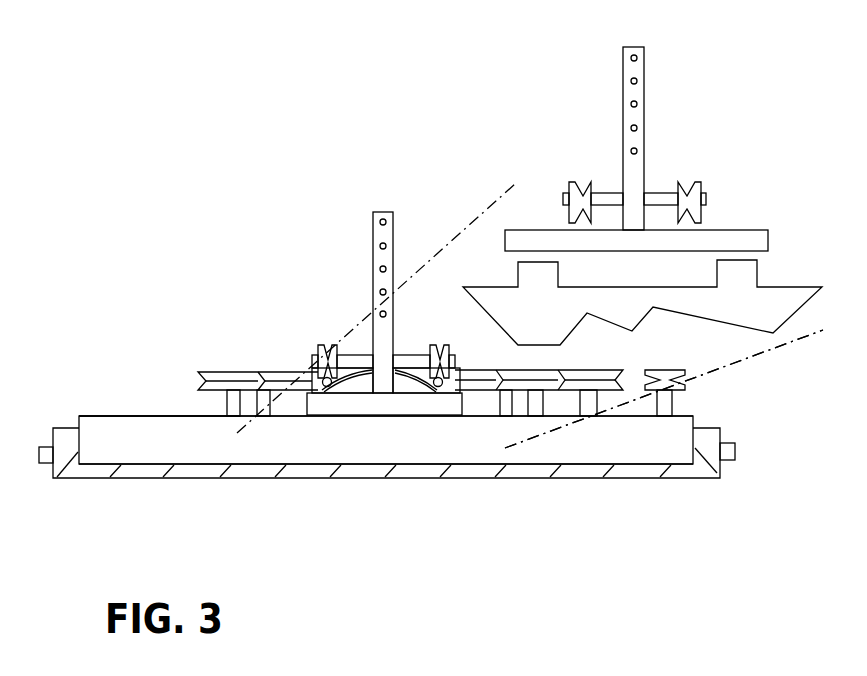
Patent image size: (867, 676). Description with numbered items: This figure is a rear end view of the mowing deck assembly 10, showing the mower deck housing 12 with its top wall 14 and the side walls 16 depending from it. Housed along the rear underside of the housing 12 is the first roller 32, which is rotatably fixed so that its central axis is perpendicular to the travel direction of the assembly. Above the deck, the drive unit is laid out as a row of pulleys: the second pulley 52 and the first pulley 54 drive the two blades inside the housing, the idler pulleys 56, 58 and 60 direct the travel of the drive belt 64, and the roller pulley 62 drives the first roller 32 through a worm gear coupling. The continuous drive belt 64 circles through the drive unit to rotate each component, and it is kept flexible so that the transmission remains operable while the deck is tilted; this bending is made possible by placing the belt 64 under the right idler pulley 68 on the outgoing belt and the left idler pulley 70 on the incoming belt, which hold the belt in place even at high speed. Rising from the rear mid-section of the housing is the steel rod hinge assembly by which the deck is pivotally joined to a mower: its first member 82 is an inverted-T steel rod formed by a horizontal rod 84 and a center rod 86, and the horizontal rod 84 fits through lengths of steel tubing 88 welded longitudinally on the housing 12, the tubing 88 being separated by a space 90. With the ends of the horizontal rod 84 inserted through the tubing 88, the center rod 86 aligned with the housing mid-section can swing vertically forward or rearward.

The mowing deck assembly 10 is at (178, 310).
The mower deck housing 12 is at (153, 413).
The top wall 14 is at (97, 417).
The side walls 16 is at (95, 456).
The first roller 32 is at (261, 470).
The second pulley 52 is at (243, 372).
The first pulley 54 is at (518, 380).
The idler pulley 56 is at (583, 376).
The idler pulley 58 is at (277, 372).
The idler pulley 60 is at (465, 372).
The roller pulley 62 is at (665, 375).
The drive belt 64 is at (332, 376).
The right idler pulley 68 is at (691, 187).
The left idler pulley 70 is at (571, 190).
The first member 82 is at (622, 113).
The horizontal rod 84 is at (334, 405).
The center rod 86 is at (380, 212).
The steel tubing 88 is at (528, 277).
The space 90 is at (658, 266).